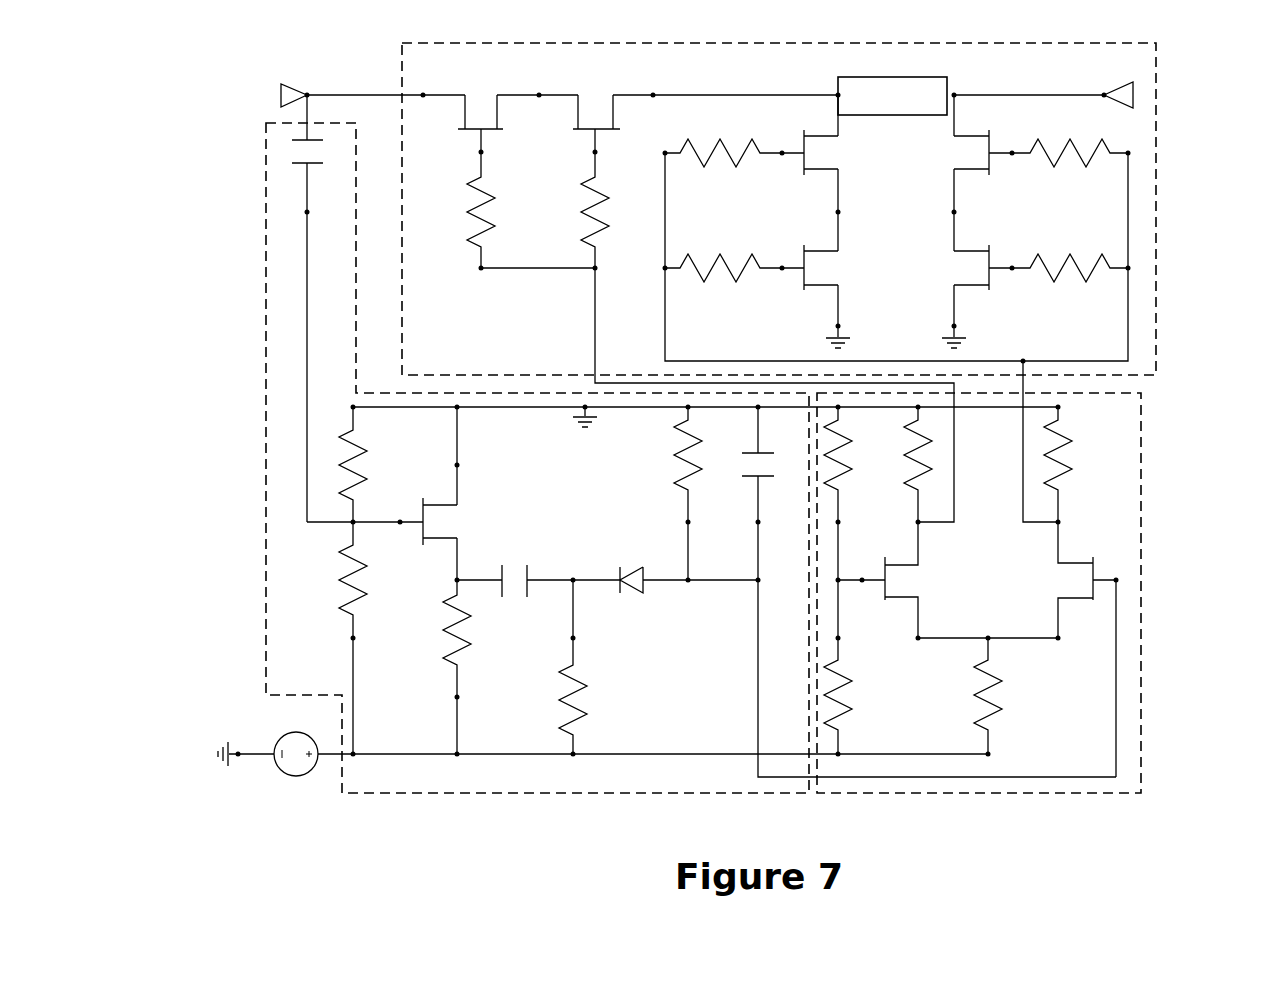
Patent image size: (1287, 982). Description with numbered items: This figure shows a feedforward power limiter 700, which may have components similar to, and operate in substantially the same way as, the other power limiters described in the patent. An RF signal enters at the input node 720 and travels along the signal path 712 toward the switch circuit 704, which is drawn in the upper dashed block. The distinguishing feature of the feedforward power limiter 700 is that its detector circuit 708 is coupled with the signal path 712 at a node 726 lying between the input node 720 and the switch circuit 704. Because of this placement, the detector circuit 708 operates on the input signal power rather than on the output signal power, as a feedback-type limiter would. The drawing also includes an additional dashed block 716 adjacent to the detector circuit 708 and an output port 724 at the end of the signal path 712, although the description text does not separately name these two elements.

The feedforward power limiter 700 is at (213, 653).
The switch circuit 704 is at (1156, 263).
The detector circuit 708 is at (541, 795).
The signal path 712 is at (690, 93).
The reference/bias generator circuit 716 is at (995, 795).
The input node 720 is at (294, 84).
The RF output port 724 is at (1133, 103).
The node 726 is at (307, 90).